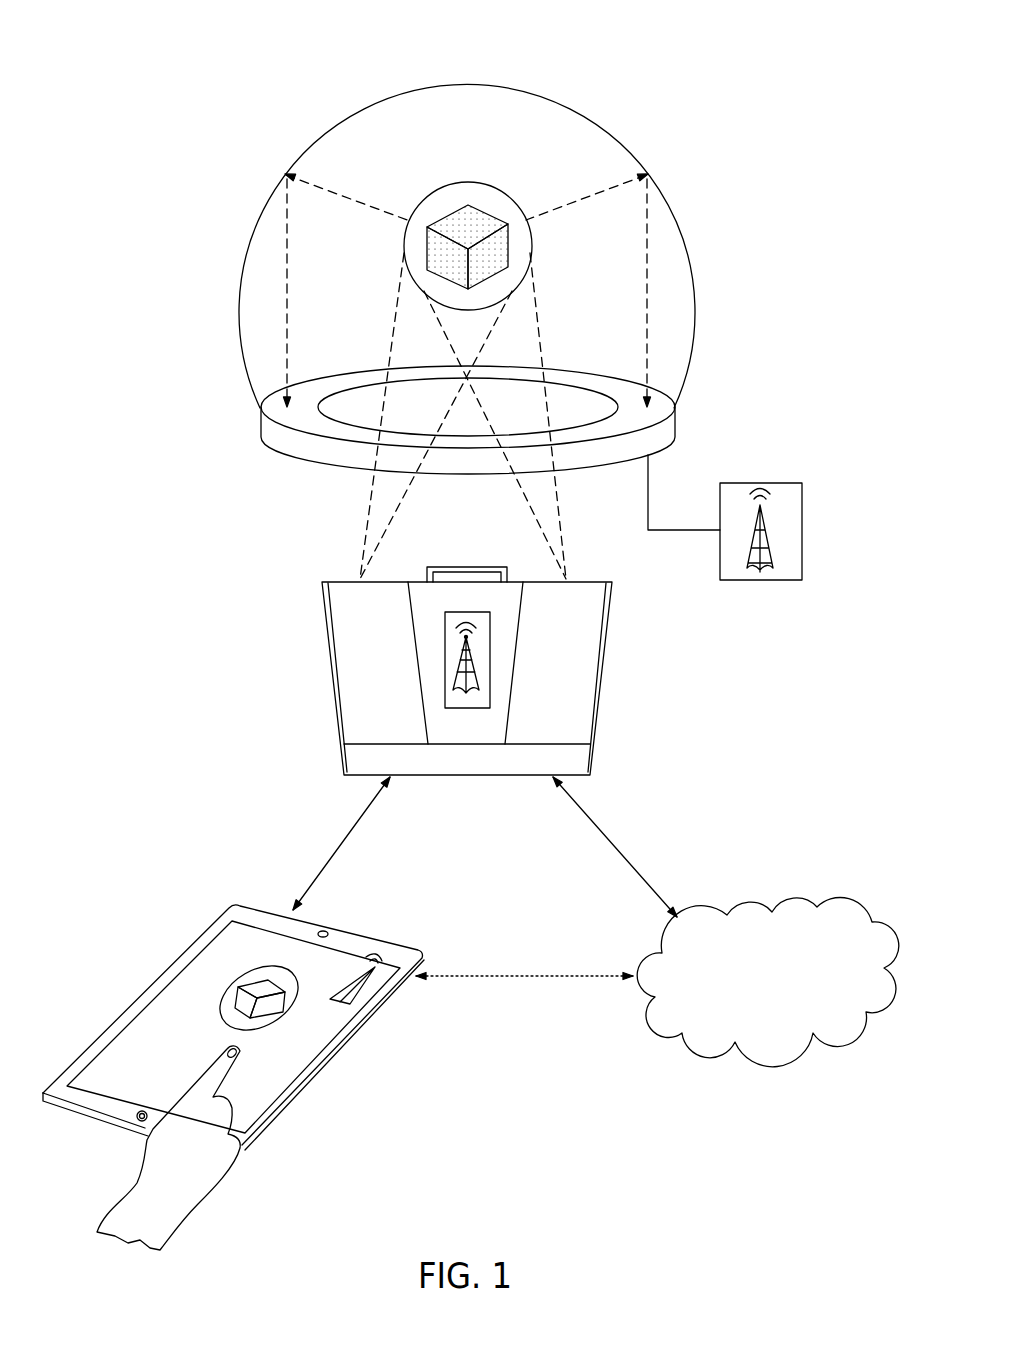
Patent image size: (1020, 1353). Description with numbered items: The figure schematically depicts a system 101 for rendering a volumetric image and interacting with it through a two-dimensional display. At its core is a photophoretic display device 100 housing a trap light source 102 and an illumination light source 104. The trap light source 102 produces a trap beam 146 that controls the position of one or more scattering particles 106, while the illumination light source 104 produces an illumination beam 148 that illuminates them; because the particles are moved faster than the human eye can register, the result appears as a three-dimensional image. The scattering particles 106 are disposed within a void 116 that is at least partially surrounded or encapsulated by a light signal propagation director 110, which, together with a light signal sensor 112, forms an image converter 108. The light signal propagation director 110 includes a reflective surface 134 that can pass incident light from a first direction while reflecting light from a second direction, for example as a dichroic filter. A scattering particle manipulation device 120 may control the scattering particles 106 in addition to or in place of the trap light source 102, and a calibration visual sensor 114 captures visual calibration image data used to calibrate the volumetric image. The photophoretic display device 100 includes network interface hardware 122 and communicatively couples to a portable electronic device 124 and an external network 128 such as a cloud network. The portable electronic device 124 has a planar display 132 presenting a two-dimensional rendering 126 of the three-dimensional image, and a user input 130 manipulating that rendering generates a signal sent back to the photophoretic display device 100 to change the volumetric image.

The photophoretic display device 100 is at (185, 558).
The system 101 is at (125, 102).
The trap light source 102 is at (335, 620).
The illumination light source 104 is at (598, 620).
The scattering particles 106 is at (468, 226).
The image converter 108 is at (668, 432).
The light signal propagation director 110 is at (596, 128).
The light signal sensor 112 is at (663, 406).
The calibration visual sensor 114 is at (497, 728).
The void 116 is at (672, 258).
The scattering particle manipulation device 120 is at (362, 401).
The network interface hardware 122 is at (491, 657).
The portable electronic device 124 is at (223, 950).
The two-dimensional rendering 126 is at (317, 963).
The external network 128 is at (792, 898).
The user input 130 is at (210, 1192).
The planar display 132 is at (140, 1050).
The reflective surface 134 is at (428, 100).
The trap beam 146 is at (368, 535).
The illumination beam 148 is at (565, 535).